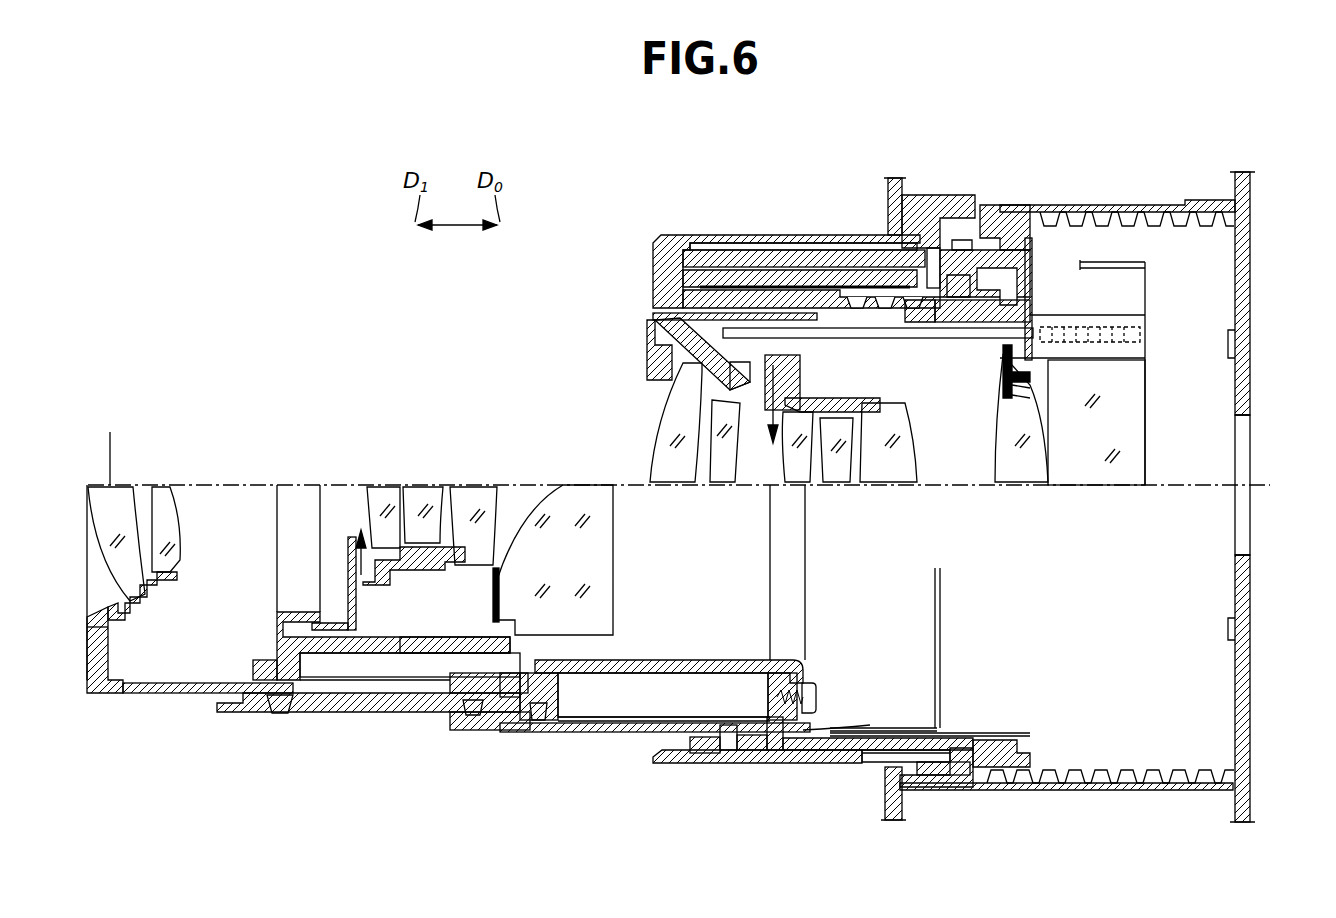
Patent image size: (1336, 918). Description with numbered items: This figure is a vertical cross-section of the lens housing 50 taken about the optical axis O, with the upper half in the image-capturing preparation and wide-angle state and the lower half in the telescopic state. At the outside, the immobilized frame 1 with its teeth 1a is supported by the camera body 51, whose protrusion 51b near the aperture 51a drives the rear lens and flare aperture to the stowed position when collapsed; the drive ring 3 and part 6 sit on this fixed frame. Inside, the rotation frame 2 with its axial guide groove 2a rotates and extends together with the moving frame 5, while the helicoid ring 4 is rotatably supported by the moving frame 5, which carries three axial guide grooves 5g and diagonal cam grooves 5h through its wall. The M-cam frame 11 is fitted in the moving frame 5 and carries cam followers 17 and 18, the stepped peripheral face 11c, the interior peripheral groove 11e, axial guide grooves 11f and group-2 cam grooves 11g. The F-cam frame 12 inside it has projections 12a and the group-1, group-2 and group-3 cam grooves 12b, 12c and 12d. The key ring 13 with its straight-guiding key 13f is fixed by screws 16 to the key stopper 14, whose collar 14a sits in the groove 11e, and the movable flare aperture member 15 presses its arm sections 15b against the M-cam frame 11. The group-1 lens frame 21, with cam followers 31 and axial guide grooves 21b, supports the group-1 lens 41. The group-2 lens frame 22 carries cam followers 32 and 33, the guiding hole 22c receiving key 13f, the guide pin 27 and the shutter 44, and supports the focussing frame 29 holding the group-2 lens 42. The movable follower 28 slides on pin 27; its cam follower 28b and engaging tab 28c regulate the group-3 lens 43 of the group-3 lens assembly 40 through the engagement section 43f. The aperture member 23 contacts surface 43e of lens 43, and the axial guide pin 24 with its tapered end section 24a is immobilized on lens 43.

The immobilized frame 1 is at (1200, 200).
The helicoid teeth of fixed barrel 1a is at (1118, 212).
The rotation frame 2 is at (760, 258).
The axial guide groove 2a is at (732, 247).
The drive ring 3 is at (935, 200).
The helicoid ring 4 is at (1008, 228).
The moving frame 5 is at (700, 245).
The axial guide grooves 5g is at (1000, 738).
The cam grooves 5h is at (767, 516).
The flange 6 is at (900, 185).
The M-cam frame 11 is at (655, 270).
The stepped peripheral face 11c is at (880, 722).
The interior peripheral groove 11e is at (655, 797).
The axial guide grooves 11f is at (509, 787).
The group-2 cam grooves 11g is at (790, 467).
The F-cam frame 12 is at (655, 296).
The projections 12a is at (528, 742).
The group-1 cam grooves 12b is at (602, 539).
The group-2 cam grooves 12c is at (688, 558).
The group-3 cam groove 12d is at (830, 270).
The key ring 13 is at (1040, 255).
The straight-guiding key 13f is at (715, 660).
The key stopper 14 is at (765, 680).
The collar 14a is at (768, 735).
The movable flare aperture member 15 is at (1145, 290).
The arm sections 15b is at (1110, 265).
The screws 16 is at (797, 692).
The cam followers 17 is at (930, 250).
The cam followers 18 is at (830, 260).
The group-1 lens frame 21 is at (650, 316).
The axial guide grooves 21b is at (182, 694).
The group-2 lens frame 22 is at (645, 362).
The guiding hole 22c is at (540, 655).
The aperture member 23 is at (1020, 398).
The axial guide pin 24 is at (1080, 328).
The end section 24a is at (1090, 310).
The guide pin 27 is at (985, 340).
The movable follower 28 is at (1070, 260).
The cam follower 28b is at (800, 197).
The engaging tab 28c is at (1025, 365).
The focussing frame 29 is at (860, 400).
The cam followers 31 is at (920, 330).
The cam followers 32 is at (985, 240).
The cam followers 33 is at (935, 340).
The group-3 lens assembly 40 is at (1085, 470).
The group-1 lens 41 is at (683, 470).
The group-2 lens 42 is at (885, 470).
The group-3 lens 43 is at (858, 507).
The aperture-member contact surface 43e is at (1030, 382).
The engagement section 43f is at (1000, 460).
The shutter 44 is at (795, 388).
The lens housing 50 is at (1163, 142).
The camera body 51 is at (1252, 210).
The aperture 51a is at (1250, 435).
The protrusion 51b is at (1240, 345).
The optical axis O is at (109, 444).